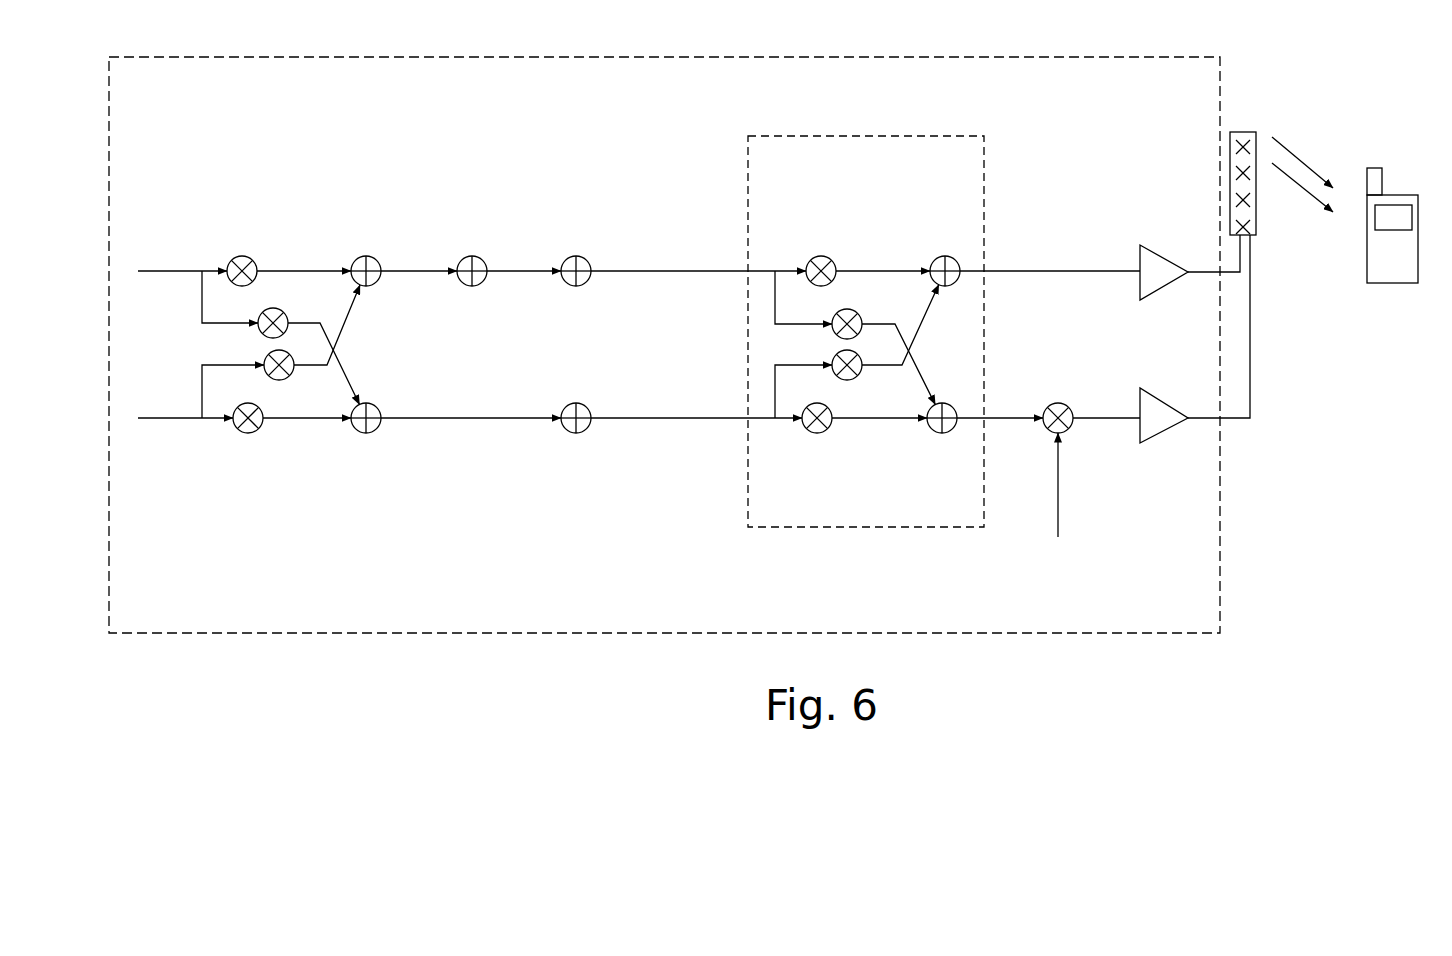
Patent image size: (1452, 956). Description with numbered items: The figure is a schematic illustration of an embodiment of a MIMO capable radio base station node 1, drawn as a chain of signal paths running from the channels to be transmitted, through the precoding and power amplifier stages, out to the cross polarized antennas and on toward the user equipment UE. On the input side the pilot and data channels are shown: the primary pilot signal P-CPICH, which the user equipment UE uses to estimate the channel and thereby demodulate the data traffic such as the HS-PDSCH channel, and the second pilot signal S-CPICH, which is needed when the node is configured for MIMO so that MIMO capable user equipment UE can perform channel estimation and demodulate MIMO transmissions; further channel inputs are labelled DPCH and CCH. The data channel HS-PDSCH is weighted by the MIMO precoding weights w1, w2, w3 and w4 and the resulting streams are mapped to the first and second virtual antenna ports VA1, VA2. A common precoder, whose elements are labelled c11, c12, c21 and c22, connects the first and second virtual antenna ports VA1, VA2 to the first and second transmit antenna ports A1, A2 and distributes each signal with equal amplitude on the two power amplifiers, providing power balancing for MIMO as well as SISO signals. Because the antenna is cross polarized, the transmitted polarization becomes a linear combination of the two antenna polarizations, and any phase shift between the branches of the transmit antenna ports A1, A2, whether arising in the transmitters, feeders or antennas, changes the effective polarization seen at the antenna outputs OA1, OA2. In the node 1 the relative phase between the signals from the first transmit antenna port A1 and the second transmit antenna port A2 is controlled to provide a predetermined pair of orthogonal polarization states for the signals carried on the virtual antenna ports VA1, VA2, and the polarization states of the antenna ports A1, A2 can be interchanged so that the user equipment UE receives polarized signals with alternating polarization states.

The radio base station node 1 is at (671, 345).
The MIMO weight multiplier w1 is at (242, 256).
The MIMO weight multiplier w2 is at (273, 308).
The MIMO weight multiplier w3 is at (279, 380).
The MIMO weight multiplier w4 is at (248, 433).
The dedicated physical channel adder DPCH is at (472, 256).
The HS-PDSCH channel HS-PDSCH is at (460, 262).
The common channel input CCH is at (462, 284).
The P-CPICH pilot signal P-CPICH is at (576, 256).
The S-CPICH pilot signal S-CPICH is at (576, 433).
The first virtual antenna port VA1 is at (698, 249).
The second virtual antenna port VA2 is at (696, 437).
The common precoder coefficient c11 is at (821, 256).
The common precoder coefficient c12 is at (847, 288).
The common precoder coefficient c21 is at (847, 380).
The common precoder coefficient c22 is at (817, 433).
The first transmit antenna port A1 is at (1050, 251).
The second transmit antenna port A2 is at (1000, 434).
The output amplifier 1 OA1 is at (1173, 262).
The output amplifier 2 OA2 is at (1179, 408).
The user equipment UE is at (1392, 225).